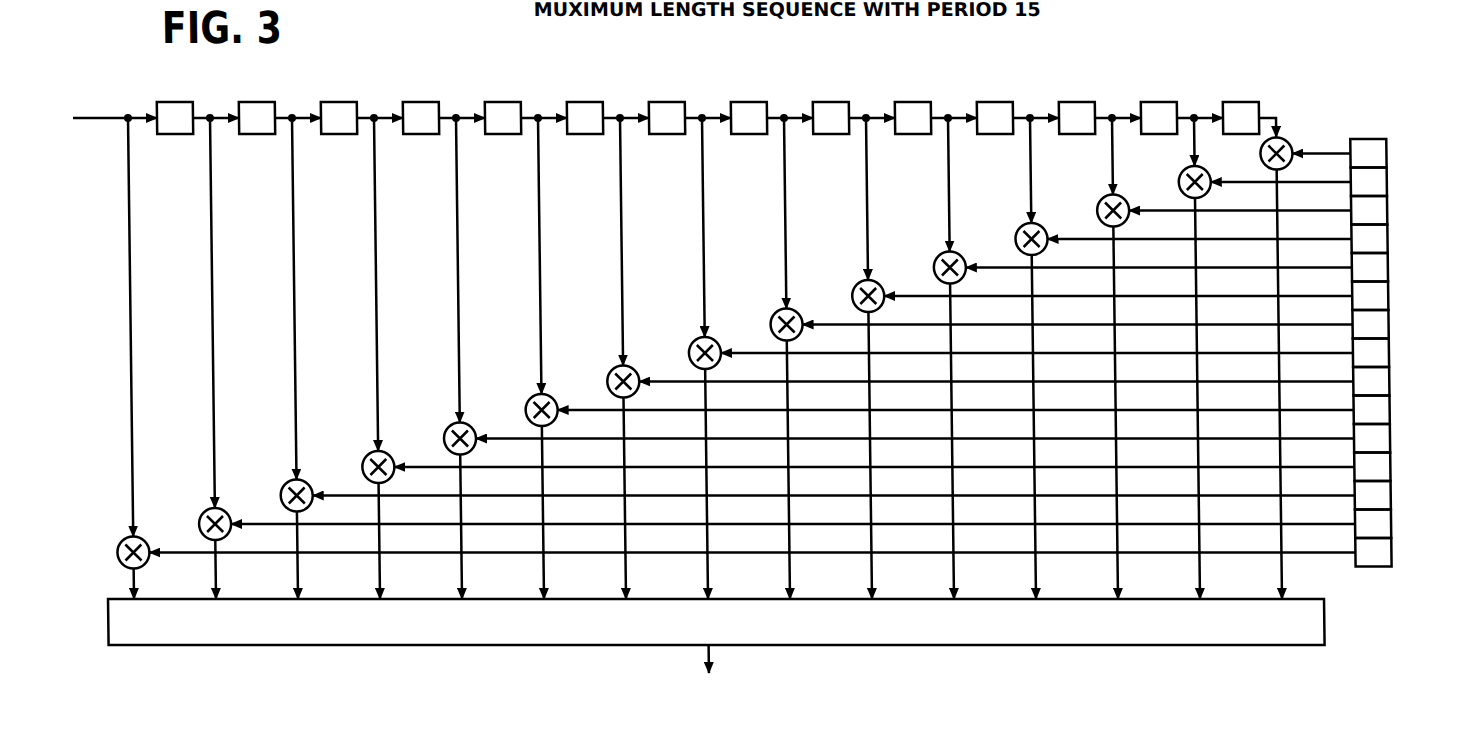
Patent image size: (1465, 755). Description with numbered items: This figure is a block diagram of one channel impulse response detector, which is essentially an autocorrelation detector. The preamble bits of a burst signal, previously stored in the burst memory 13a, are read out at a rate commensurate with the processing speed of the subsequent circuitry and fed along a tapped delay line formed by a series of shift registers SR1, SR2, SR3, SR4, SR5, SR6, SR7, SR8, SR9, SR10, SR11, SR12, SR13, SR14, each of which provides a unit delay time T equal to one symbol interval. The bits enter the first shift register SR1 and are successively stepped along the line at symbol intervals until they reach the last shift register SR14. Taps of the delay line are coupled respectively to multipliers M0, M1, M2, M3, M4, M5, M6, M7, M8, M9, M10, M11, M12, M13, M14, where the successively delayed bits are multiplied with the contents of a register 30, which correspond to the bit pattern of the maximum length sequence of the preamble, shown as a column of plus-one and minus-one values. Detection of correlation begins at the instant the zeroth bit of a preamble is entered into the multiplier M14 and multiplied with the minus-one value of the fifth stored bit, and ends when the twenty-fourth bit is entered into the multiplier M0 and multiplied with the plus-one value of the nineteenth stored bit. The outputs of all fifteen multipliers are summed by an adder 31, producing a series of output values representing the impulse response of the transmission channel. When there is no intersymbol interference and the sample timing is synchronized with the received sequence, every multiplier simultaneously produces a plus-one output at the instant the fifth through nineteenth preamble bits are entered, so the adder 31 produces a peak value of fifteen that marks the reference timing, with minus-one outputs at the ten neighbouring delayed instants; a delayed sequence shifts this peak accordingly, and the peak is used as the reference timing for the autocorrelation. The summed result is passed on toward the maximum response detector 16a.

The shift register SR1 is at (175, 102).
The shift register SR2 is at (257, 102).
The shift register SR3 is at (339, 102).
The shift register SR4 is at (421, 102).
The shift register SR5 is at (503, 102).
The shift register SR6 is at (585, 102).
The shift register SR7 is at (667, 102).
The shift register SR8 is at (749, 102).
The shift register SR9 is at (831, 102).
The shift register SR10 is at (913, 102).
The shift register SR11 is at (995, 102).
The shift register SR12 is at (1077, 102).
The shift register SR13 is at (1159, 102).
The shift register SR14 is at (1241, 102).
The multiplier M0 is at (116, 542).
The multiplier M1 is at (198, 513).
The multiplier M2 is at (280, 484).
The multiplier M3 is at (362, 456).
The multiplier M4 is at (444, 428).
The multiplier M5 is at (526, 399).
The multiplier M6 is at (608, 370).
The multiplier M7 is at (690, 342).
The multiplier M8 is at (772, 314).
The multiplier M9 is at (854, 285).
The multiplier M10 is at (936, 256).
The multiplier M11 is at (1018, 228).
The multiplier M12 is at (1100, 200).
The multiplier M13 is at (1182, 171).
The multiplier M14 is at (1289, 143).
The register 30 is at (1362, 566).
The adder 31 is at (1109, 645).
The burst memory 13a is at (97, 70).
The maximum response detector 16a is at (755, 690).